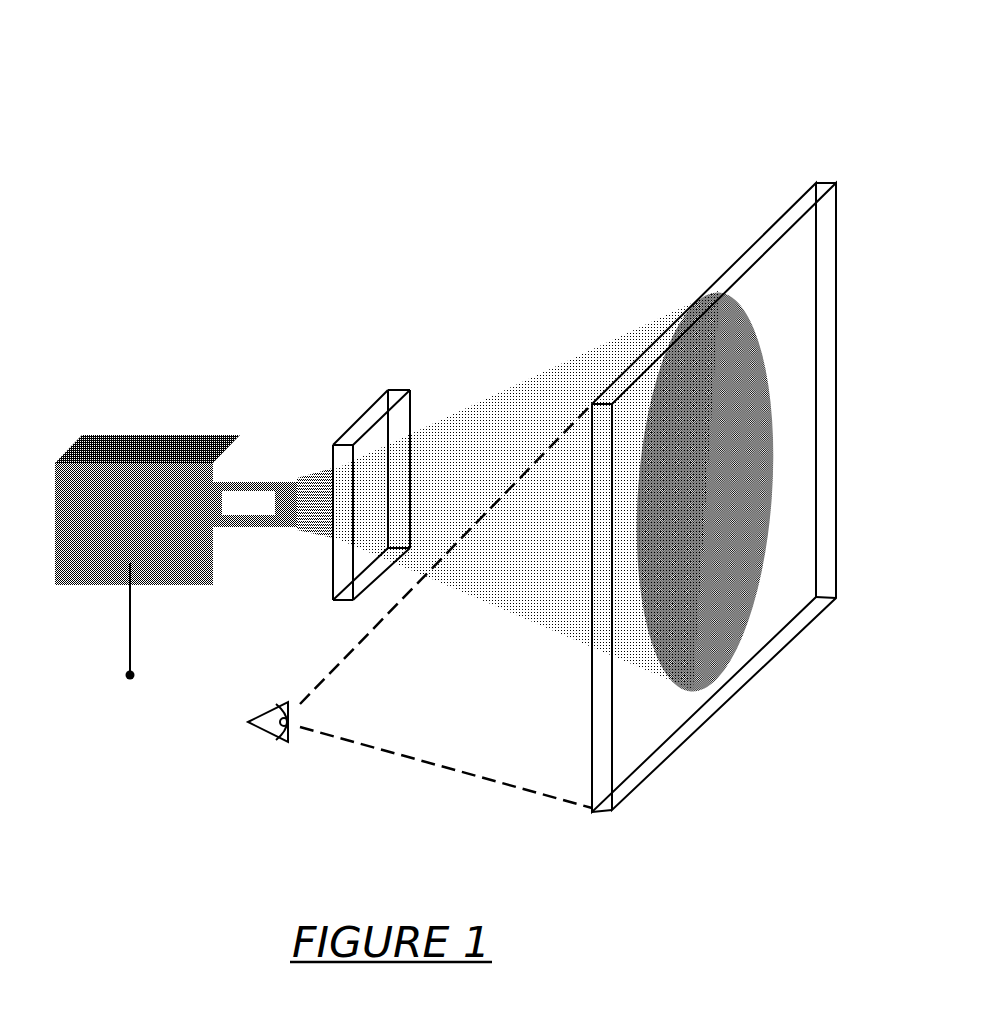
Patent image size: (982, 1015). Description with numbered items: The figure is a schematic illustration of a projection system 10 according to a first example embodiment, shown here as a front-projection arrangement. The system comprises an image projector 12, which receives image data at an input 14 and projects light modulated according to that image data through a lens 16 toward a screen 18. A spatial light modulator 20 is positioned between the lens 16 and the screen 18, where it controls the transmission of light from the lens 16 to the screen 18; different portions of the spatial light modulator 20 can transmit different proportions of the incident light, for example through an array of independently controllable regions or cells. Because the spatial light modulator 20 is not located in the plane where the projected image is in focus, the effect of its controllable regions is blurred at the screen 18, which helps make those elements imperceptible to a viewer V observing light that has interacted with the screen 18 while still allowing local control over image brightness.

The projection system 10 is at (316, 84).
The image projector 12 is at (98, 455).
The input 14 is at (117, 675).
The lens 16 is at (275, 462).
The screen 18 is at (590, 668).
The spatial light modulator 20 is at (370, 410).
The viewer V is at (265, 732).